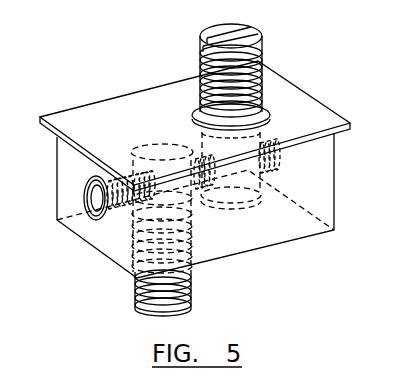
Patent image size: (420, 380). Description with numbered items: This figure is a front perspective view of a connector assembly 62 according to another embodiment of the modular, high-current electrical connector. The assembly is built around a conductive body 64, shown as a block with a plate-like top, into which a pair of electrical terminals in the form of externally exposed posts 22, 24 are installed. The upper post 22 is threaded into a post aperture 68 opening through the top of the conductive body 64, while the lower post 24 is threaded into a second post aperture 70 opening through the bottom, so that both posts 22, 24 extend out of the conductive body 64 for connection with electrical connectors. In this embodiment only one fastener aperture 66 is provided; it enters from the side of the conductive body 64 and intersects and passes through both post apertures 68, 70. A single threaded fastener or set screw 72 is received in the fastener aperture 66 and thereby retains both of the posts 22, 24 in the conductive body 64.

The connector assembly 62 is at (81, 55).
The electrical terminal post 22 is at (265, 57).
The post aperture 68 is at (268, 114).
The conductive body 64 is at (337, 172).
The set screw 72 is at (97, 198).
The fastener aperture 66 is at (100, 212).
The electrical terminal post 24 is at (133, 294).
The post aperture 70 is at (187, 210).